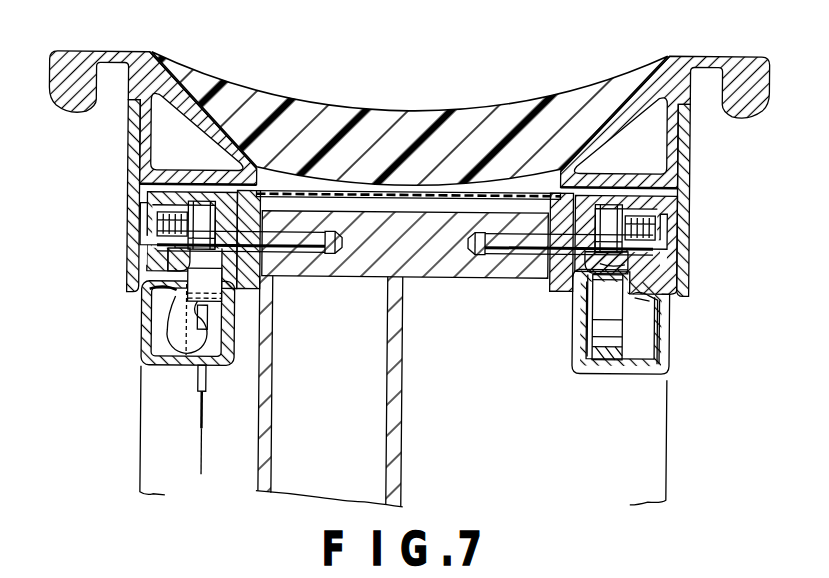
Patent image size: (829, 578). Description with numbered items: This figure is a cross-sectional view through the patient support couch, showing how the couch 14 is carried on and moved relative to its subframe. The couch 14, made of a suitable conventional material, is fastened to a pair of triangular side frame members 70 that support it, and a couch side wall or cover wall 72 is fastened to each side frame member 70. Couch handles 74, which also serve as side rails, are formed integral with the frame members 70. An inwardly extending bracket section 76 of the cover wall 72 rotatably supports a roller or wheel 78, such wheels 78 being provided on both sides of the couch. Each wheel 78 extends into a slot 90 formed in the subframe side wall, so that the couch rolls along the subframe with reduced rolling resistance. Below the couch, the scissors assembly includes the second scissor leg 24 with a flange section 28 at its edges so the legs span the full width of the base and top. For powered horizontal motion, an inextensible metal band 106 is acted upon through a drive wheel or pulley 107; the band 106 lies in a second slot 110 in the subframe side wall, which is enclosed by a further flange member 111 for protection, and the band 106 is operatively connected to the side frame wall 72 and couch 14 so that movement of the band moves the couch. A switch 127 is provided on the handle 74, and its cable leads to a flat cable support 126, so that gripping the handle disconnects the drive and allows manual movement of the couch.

The couch section 14 is at (378, 108).
The second scissor leg 24 is at (265, 490).
The flange section 28 is at (435, 263).
The triangular side frame member 70 is at (133, 139).
The couch side wall or cover wall 72 is at (130, 175).
The couch handle 74 is at (69, 104).
The inwardly extending bracket section 76 is at (145, 290).
The roller or wheel 78 is at (160, 238).
The slot 90 is at (205, 242).
The inextensible metal band 106 is at (622, 268).
The drive wheel or pulley 107 is at (607, 342).
The second slot 110 is at (638, 350).
The further flange member 111 is at (672, 340).
The flat cable support 126 is at (208, 322).
The switch 127 is at (203, 420).